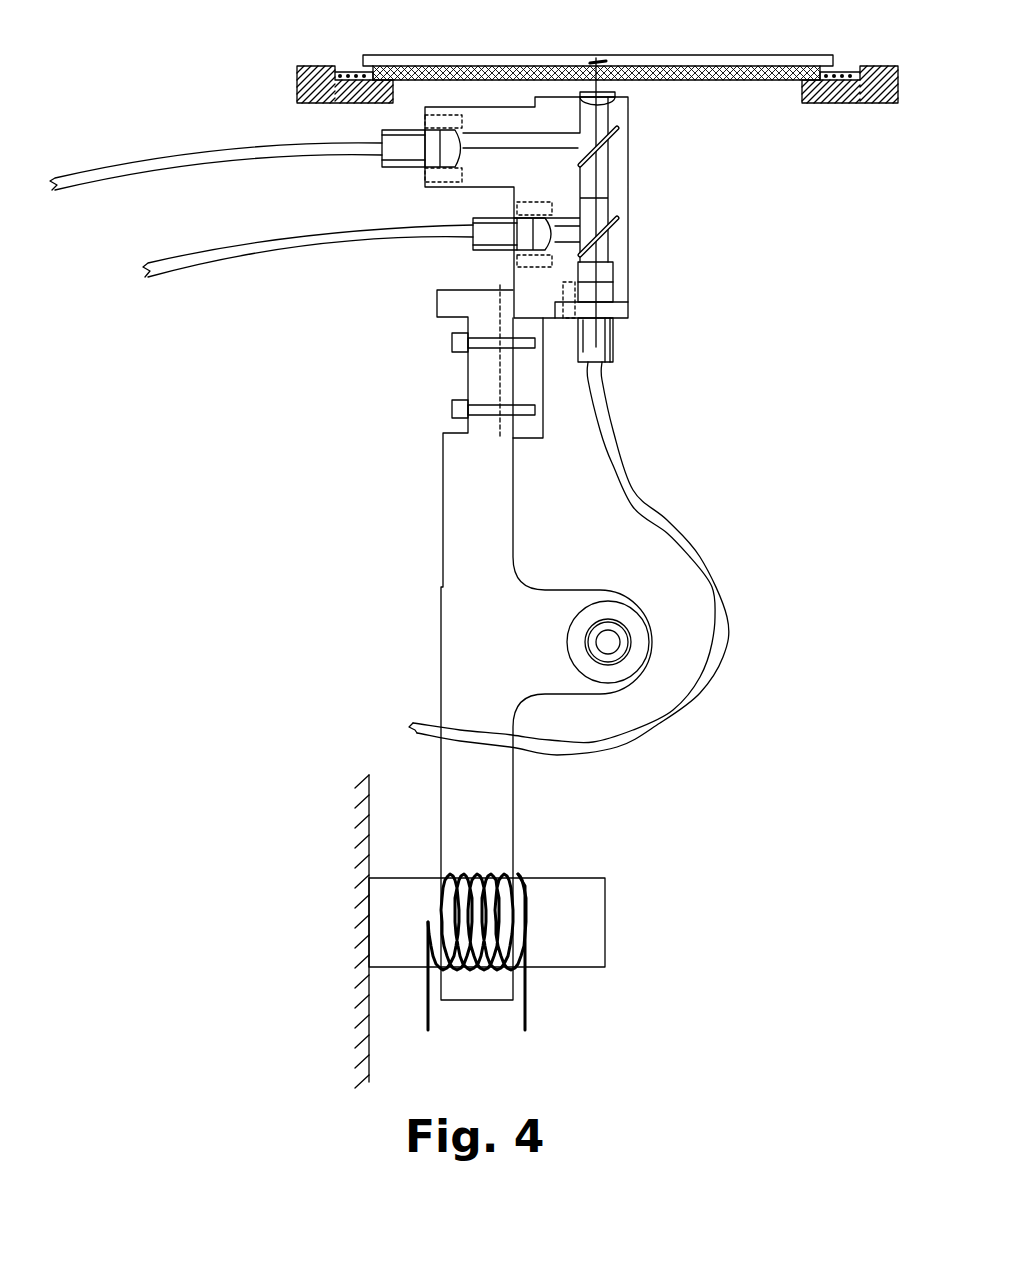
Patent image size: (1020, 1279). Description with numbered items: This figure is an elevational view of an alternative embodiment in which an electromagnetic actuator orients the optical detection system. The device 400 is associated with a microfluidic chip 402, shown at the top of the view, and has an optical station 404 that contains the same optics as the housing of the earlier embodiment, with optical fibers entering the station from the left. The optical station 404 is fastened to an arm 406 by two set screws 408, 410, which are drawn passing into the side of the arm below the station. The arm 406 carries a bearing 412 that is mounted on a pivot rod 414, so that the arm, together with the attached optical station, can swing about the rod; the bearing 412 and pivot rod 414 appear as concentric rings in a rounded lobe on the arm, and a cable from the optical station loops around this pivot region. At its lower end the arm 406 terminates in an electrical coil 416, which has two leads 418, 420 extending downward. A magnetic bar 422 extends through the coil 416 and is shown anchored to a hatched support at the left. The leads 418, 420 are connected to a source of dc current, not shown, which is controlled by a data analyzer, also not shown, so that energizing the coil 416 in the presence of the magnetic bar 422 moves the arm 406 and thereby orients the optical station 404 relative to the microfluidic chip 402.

The device 400 is at (335, 612).
The microfluidic chip 402 is at (519, 57).
The optical station 404 is at (628, 194).
The arm 406 is at (450, 512).
The set screw 408 is at (470, 337).
The set screw 410 is at (470, 405).
The bearing 412 is at (630, 660).
The pivot rod 414 is at (616, 637).
The electrical coil 416 is at (505, 878).
The lead 418 is at (525, 1025).
The lead 420 is at (430, 1022).
The magnetic bar 422 is at (605, 915).